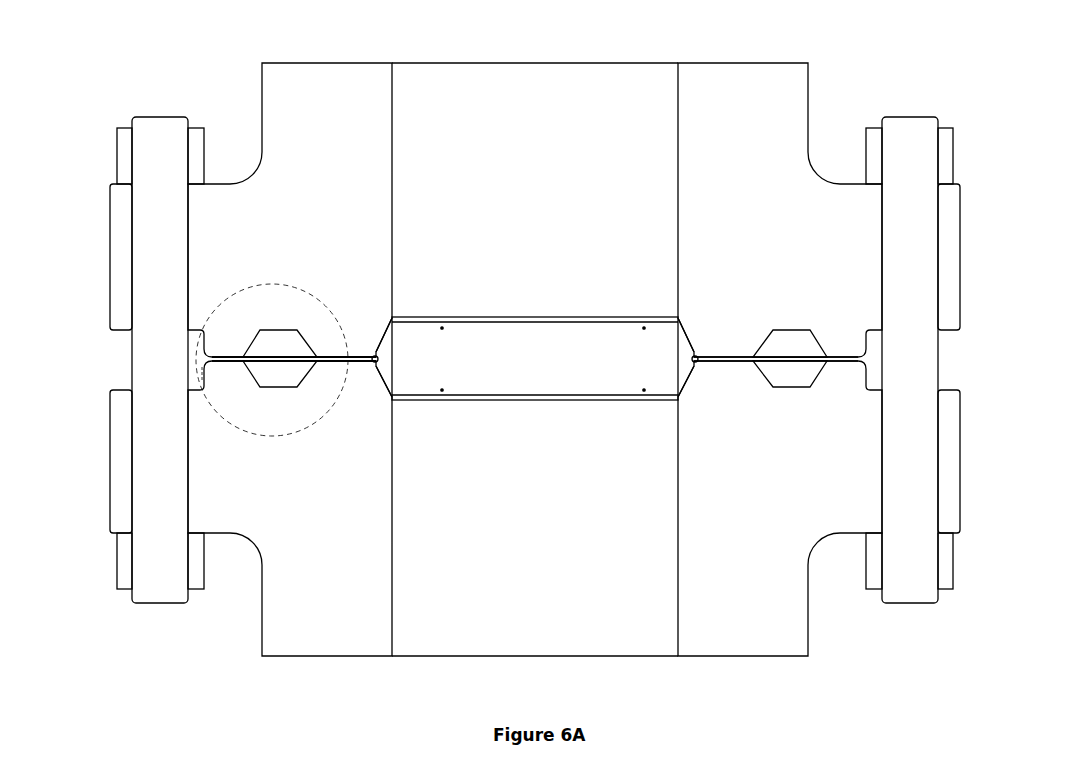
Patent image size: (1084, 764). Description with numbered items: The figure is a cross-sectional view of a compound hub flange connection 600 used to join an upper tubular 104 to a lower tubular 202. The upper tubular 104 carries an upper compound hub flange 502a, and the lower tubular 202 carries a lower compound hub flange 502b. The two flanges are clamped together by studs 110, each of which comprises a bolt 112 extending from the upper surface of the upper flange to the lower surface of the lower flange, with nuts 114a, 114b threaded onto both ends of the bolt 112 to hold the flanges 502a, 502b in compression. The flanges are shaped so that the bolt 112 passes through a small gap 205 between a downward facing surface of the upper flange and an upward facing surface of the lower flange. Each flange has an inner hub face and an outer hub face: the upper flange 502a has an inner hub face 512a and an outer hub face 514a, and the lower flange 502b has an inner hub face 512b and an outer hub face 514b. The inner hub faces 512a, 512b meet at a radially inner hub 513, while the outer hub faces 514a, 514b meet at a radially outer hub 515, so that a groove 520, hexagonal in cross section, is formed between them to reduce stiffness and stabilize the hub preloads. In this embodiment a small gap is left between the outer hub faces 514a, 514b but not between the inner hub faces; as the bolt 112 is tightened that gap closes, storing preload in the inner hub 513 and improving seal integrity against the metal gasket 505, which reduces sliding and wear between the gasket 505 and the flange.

The compound hub flange connection 600 is at (116, 49).
The upper tubular 104 is at (338, 76).
The lower tubular 202 is at (291, 628).
The stud 110 is at (490, 331).
The bolt 112 is at (149, 223).
The nut 114a is at (123, 158).
The nut 114b is at (123, 567).
The upper compound hub flange 502a is at (123, 262).
The lower compound hub flange 502b is at (123, 510).
The gap 205 is at (500, 331).
The gasket 505 is at (436, 320).
The inner hub face 512a is at (344, 352).
The inner hub face 512b is at (344, 370).
The inner hub 513 is at (326, 360).
The outer hub face 514a is at (229, 350).
The outer hub face 514b is at (228, 369).
The outer hub 515 is at (221, 361).
The groove 520 is at (297, 386).